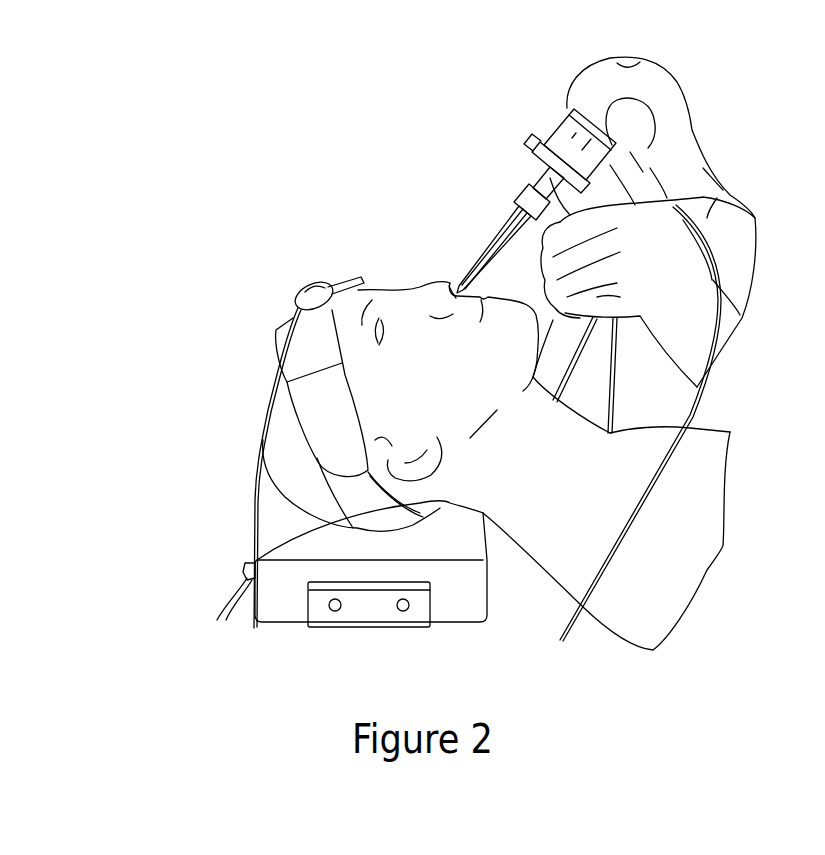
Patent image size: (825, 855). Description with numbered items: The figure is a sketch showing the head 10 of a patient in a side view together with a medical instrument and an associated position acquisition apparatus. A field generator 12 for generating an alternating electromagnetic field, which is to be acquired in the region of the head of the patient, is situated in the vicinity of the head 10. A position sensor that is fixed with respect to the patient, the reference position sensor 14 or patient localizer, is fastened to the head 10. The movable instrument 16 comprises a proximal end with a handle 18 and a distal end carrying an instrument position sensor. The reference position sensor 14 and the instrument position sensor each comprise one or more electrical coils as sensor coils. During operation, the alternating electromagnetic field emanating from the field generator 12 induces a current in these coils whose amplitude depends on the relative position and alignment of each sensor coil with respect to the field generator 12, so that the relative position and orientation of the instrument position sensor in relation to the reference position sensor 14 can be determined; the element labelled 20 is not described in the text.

The head 10 is at (263, 403).
The field generator 12 is at (263, 552).
The reference position sensor 14 is at (307, 288).
The movable instrument 16 is at (510, 225).
The handle 18 is at (534, 165).
The nostril 20 is at (450, 284).